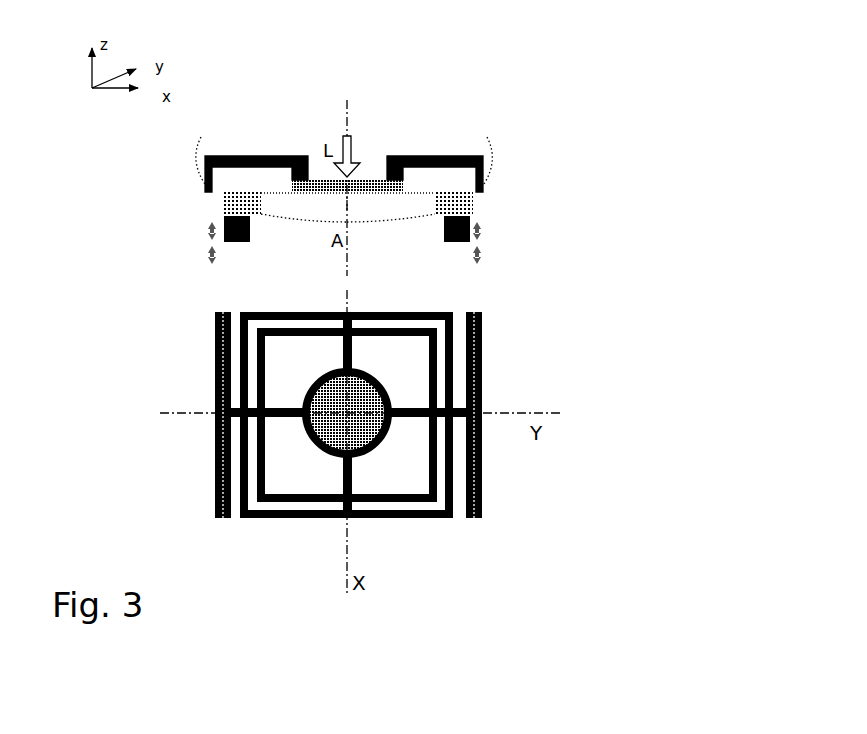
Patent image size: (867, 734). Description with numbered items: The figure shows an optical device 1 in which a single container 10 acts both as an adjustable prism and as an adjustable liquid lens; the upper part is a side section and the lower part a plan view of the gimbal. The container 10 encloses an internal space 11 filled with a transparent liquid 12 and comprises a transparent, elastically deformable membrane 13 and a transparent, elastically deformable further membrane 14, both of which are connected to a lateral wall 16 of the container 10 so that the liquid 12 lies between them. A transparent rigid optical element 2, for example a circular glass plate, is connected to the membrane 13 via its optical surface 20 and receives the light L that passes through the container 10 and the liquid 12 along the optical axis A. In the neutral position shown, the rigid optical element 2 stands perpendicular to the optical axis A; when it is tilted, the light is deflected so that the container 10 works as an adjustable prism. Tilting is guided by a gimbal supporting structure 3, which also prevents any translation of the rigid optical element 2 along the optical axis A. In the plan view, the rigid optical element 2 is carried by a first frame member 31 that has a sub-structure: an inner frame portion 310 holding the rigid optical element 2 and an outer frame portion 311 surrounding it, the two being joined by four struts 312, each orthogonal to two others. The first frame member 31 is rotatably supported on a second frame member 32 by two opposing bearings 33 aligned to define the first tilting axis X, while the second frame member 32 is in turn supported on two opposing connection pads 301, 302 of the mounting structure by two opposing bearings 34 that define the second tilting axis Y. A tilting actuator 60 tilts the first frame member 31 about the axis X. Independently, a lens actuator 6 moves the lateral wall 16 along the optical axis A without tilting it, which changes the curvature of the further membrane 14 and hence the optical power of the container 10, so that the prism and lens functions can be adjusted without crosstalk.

The optical device 1 is at (236, 117).
The transparent rigid optical element 2 is at (377, 178).
The gimbal supporting structure 3 is at (450, 155).
The lens actuator 6 is at (483, 236).
The container 10 is at (224, 203).
The internal space 11 is at (316, 200).
The transparent liquid 12 is at (357, 210).
The membrane 13 is at (271, 190).
The further membrane 14 is at (405, 217).
The lateral wall 16 is at (455, 203).
The optical surface 20 is at (315, 178).
The tilting actuator 60 is at (492, 153).
The connection pad 301 is at (215, 360).
The connection pad 302 is at (483, 355).
The inner frame portion 310 is at (318, 382).
The outer frame portion 311 is at (268, 517).
The struts 312 is at (283, 418).
The first frame member 31 is at (305, 501).
The second frame member 32 is at (405, 518).
The bearings 33 is at (345, 320).
The bearings 34 is at (212, 445).